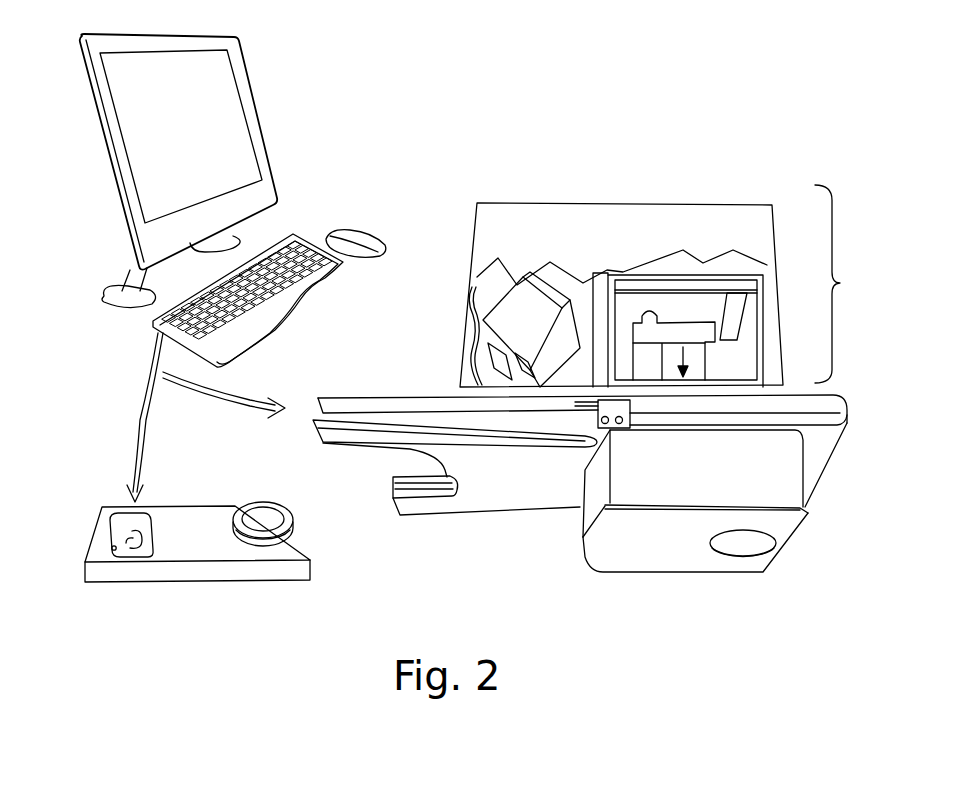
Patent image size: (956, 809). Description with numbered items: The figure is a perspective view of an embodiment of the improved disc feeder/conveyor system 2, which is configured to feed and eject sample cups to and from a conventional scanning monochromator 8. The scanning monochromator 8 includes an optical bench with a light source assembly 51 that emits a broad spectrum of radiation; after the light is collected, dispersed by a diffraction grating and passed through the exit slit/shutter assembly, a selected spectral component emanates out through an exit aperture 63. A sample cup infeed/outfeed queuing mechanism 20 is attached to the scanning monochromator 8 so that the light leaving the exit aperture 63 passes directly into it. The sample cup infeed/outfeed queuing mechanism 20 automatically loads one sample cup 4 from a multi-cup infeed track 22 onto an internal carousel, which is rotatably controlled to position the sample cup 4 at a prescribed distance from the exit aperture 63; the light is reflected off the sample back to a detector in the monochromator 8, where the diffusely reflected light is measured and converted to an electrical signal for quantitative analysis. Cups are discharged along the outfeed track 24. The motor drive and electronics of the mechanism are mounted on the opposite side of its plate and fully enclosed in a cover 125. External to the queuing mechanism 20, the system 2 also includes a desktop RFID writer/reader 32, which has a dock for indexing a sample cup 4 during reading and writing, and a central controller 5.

The disc feeder/conveyor system 2 is at (557, 113).
The sample cup 4 is at (262, 500).
The central controller 5 is at (282, 96).
The scanning monochromator 8 is at (836, 284).
The sample cup infeed/outfeed queuing mechanism 20 is at (519, 530).
The multi-cup infeed track 22 is at (383, 398).
The outfeed track 24 is at (430, 520).
The desktop RFID writer/reader 32 is at (263, 595).
The light source assembly 51 is at (535, 330).
The exit aperture 63 is at (670, 350).
The cover 125 is at (712, 472).